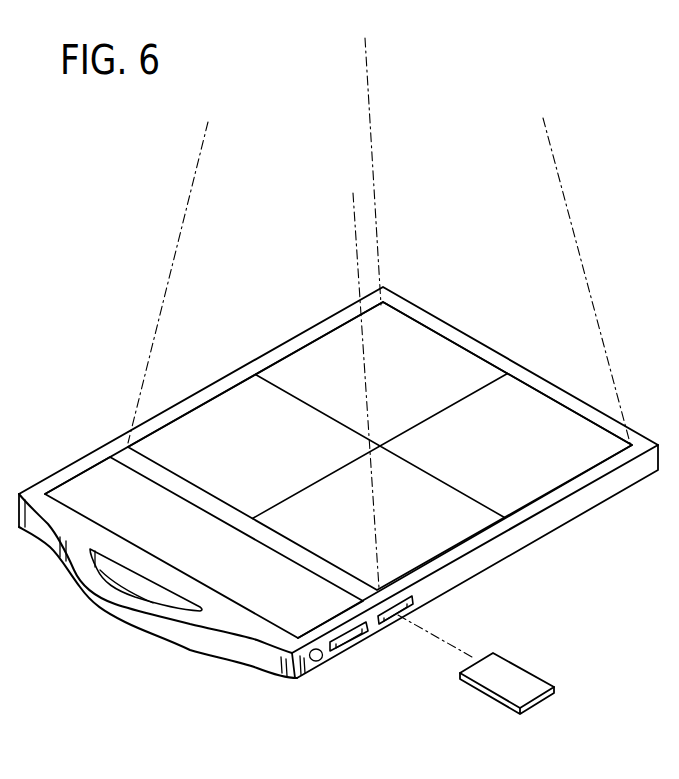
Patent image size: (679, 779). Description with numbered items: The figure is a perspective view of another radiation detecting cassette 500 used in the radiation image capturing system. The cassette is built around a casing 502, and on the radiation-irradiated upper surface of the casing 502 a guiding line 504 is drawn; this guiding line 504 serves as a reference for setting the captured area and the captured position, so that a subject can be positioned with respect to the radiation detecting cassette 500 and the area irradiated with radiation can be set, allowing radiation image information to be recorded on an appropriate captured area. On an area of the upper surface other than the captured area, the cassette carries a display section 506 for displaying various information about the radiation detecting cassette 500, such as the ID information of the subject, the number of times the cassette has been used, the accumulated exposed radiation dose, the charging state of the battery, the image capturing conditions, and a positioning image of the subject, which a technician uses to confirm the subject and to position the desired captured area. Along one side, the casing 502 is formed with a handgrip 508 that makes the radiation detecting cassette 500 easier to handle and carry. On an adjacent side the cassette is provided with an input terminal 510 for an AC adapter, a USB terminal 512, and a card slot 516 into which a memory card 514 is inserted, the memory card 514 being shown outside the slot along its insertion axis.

The radiation detecting cassette 500 is at (110, 434).
The casing 502 is at (500, 548).
The guiding line 504 is at (437, 336).
The display section 506 is at (67, 492).
The handgrip 508 is at (128, 615).
The input terminal 510 is at (321, 661).
The USB terminal 512 is at (357, 648).
The memory card 514 is at (532, 684).
The card slot 516 is at (393, 620).